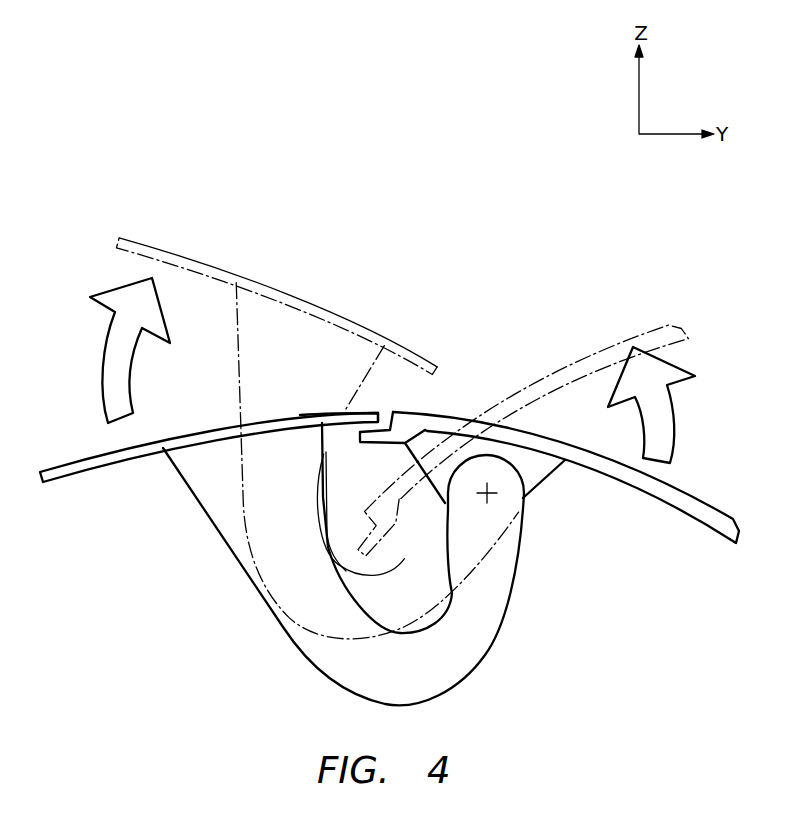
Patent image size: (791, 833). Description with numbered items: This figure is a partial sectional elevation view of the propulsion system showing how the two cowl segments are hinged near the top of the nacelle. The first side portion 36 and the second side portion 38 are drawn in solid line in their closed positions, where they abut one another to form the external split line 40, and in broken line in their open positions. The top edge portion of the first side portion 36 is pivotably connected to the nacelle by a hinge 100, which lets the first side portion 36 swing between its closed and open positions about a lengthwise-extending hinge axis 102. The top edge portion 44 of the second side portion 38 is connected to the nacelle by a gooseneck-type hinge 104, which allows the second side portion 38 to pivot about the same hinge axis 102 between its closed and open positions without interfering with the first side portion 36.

The first side portion 36 is at (608, 338).
The second side portion 38 is at (233, 268).
The external split line 40 is at (385, 401).
The top edge portion 44 is at (302, 413).
The hinge 100 is at (537, 472).
The hinge axis 102 is at (490, 495).
The gooseneck-type hinge 104 is at (215, 505).